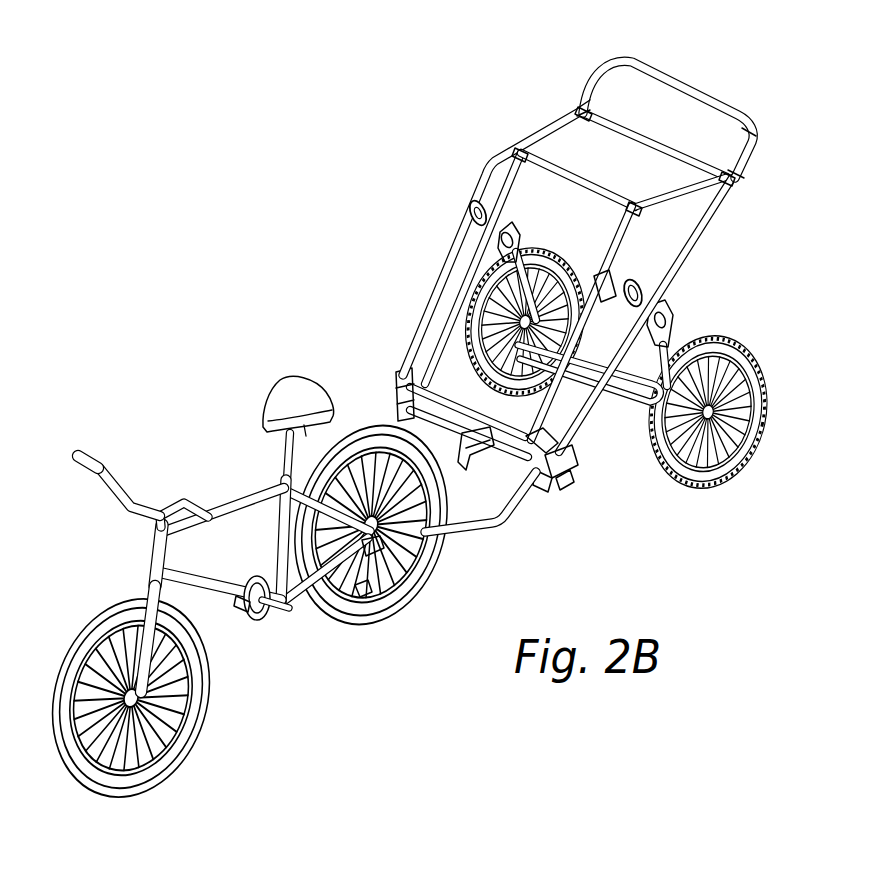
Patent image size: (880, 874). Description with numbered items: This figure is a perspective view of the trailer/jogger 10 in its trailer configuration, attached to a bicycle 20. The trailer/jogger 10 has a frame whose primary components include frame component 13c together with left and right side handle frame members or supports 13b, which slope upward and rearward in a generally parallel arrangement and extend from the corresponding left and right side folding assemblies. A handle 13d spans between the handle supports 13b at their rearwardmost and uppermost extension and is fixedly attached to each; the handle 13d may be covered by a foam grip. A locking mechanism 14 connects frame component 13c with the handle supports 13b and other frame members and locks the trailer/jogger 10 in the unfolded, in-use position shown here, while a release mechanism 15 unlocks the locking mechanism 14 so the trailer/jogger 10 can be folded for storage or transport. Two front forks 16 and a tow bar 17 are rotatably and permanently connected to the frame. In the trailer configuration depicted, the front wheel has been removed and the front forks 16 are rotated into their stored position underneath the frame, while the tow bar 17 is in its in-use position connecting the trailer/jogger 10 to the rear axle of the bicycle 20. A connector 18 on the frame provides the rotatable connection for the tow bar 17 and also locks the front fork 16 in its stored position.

The trailer/jogger 10 is at (560, 320).
The handle frame members 13b is at (703, 230).
The frame component 13c is at (683, 346).
The handle 13d is at (700, 93).
The locking mechanism 14 is at (516, 240).
The release mechanism 15 is at (480, 230).
The front forks 16 is at (452, 425).
The tow bar 17 is at (462, 540).
The connector 18 is at (574, 466).
The bicycle 20 is at (121, 438).